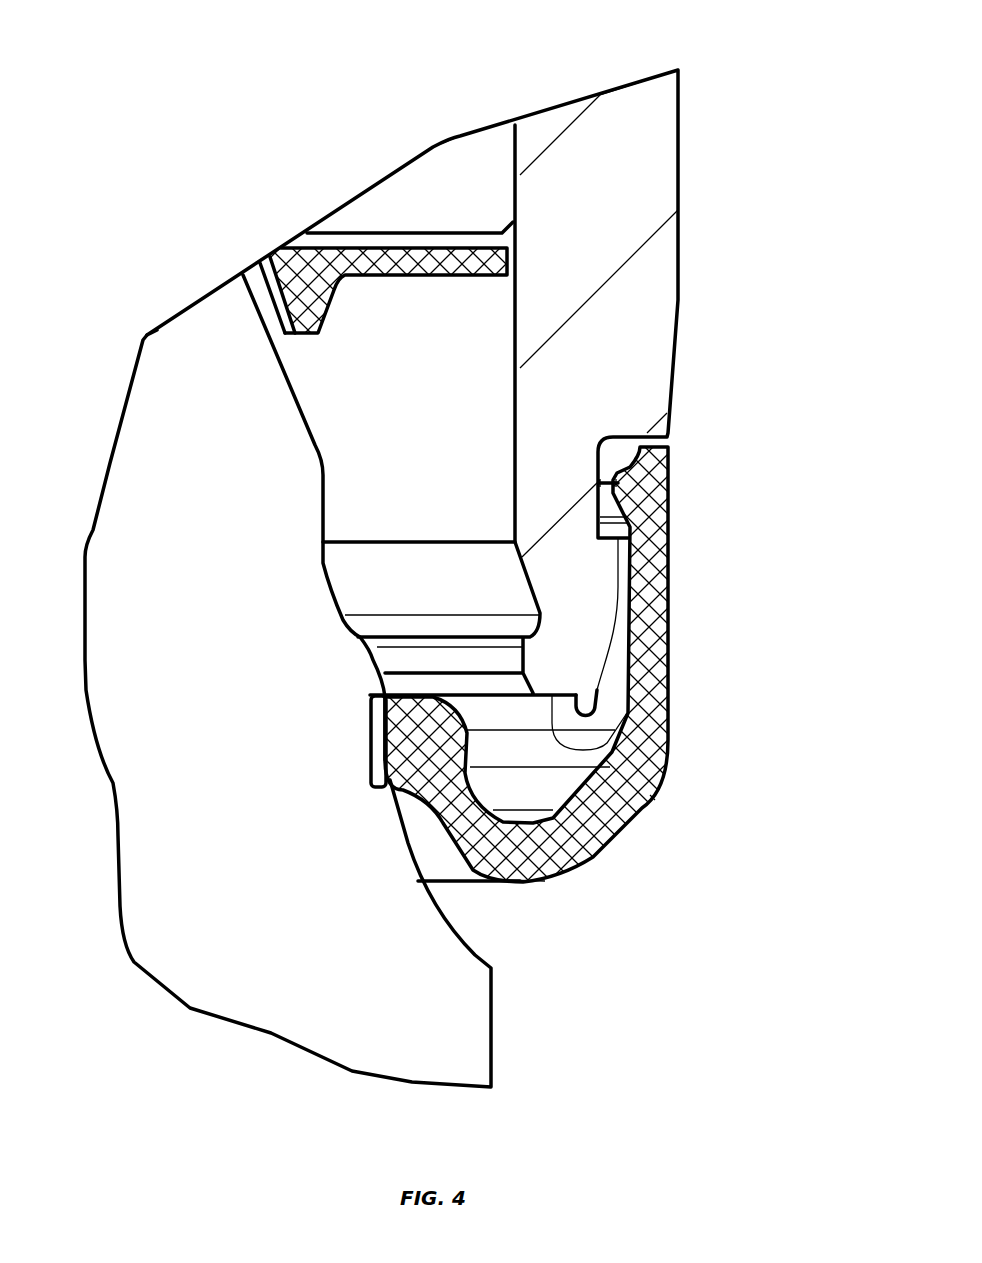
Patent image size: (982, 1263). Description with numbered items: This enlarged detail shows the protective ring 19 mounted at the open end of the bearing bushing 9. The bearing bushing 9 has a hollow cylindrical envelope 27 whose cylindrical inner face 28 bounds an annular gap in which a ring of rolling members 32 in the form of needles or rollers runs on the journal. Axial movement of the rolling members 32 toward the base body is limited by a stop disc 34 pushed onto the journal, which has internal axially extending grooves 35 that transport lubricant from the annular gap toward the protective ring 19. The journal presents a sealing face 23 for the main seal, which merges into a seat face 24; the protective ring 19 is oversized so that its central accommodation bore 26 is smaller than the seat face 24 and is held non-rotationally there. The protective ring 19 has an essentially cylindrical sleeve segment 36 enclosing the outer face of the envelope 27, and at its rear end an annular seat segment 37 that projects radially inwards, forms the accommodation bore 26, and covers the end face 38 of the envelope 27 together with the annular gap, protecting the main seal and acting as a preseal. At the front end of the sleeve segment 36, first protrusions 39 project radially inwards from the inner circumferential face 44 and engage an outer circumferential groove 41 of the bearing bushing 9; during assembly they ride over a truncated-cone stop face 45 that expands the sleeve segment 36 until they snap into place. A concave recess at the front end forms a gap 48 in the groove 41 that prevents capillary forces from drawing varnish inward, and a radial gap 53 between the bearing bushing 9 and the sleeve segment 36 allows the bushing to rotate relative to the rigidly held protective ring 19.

The bearing bushing 9 is at (692, 148).
The protective ring 19 is at (652, 818).
The sealing face 23 is at (322, 457).
The seat face 24 is at (412, 800).
The central accommodation bore 26 is at (369, 725).
The hollow cylindrical envelope 27 is at (635, 110).
The cylindrical inner face 28 is at (515, 316).
The rolling members 32 is at (467, 153).
The stop disc 34 is at (380, 255).
The axially extending grooves 35 is at (285, 303).
The sleeve segment 36 is at (650, 565).
The annular seat segment 37 is at (545, 853).
The end face 38 is at (605, 712).
The first protrusions 39 is at (600, 484).
The outer circumferential groove 41 is at (622, 518).
The inner circumferential face 44 is at (625, 570).
The stop face 45 is at (660, 650).
The gap 48 is at (623, 453).
The radial gap 53 is at (645, 458).